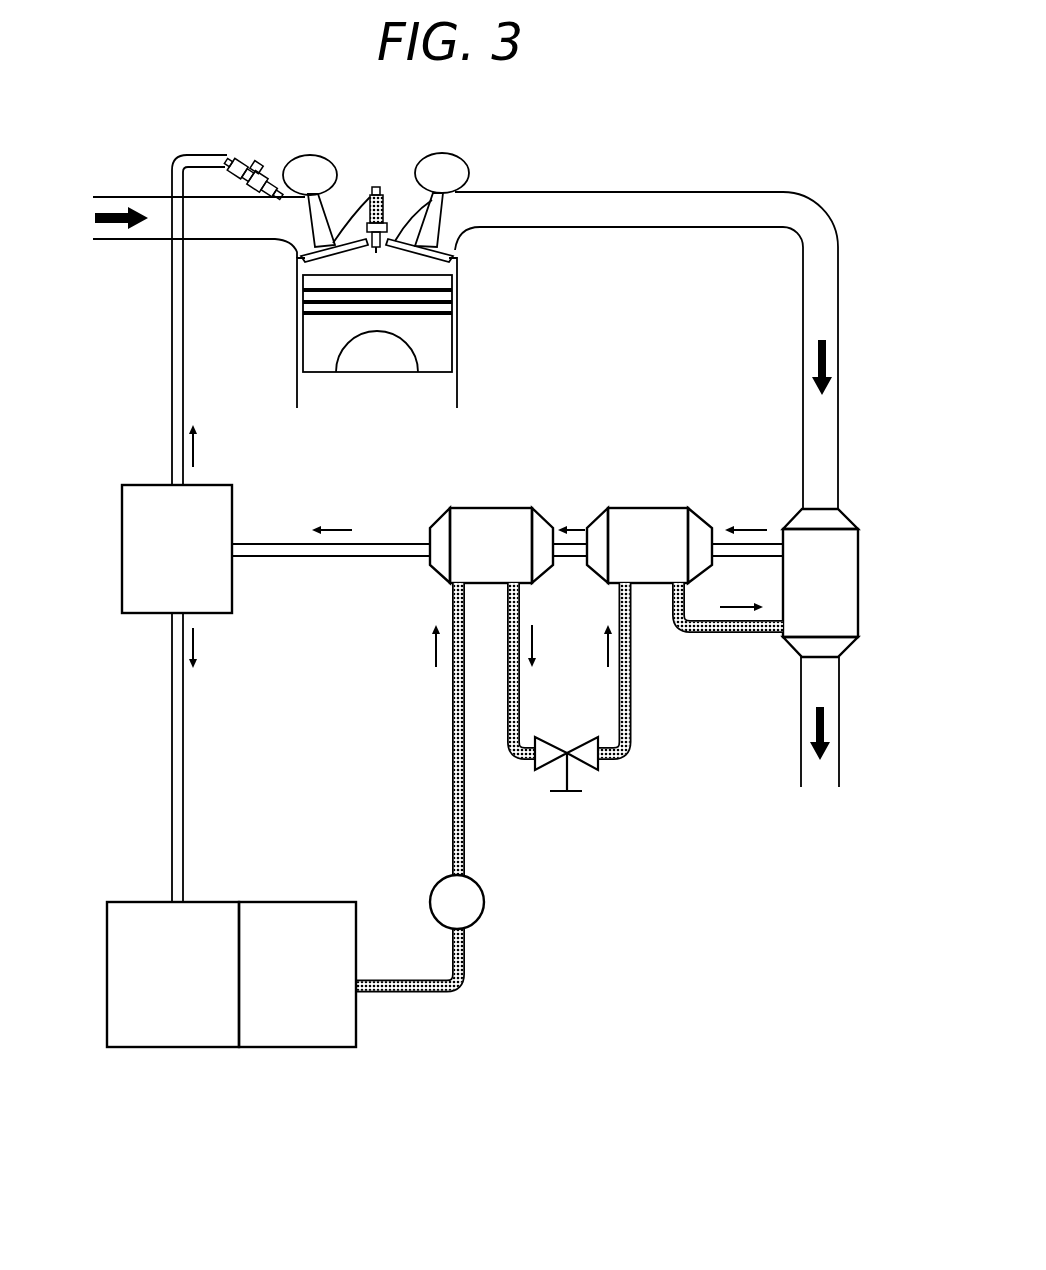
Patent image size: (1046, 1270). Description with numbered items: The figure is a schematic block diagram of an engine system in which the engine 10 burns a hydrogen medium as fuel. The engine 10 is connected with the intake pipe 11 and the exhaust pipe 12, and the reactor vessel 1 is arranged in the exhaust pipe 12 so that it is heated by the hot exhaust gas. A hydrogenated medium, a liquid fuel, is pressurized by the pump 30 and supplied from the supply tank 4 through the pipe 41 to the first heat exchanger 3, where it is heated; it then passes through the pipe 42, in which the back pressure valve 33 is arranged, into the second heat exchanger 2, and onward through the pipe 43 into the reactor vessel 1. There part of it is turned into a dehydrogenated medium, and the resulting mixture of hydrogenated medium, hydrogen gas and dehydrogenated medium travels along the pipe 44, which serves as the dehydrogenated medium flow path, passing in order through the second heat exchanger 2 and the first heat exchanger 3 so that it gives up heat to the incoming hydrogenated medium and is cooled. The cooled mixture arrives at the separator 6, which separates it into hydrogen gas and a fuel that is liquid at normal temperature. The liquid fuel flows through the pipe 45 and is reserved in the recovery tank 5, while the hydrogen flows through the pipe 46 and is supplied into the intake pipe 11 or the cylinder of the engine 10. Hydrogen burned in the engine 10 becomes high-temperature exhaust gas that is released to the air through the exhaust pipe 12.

The reactor vessel 1 is at (853, 590).
The second heat exchanger 2 is at (659, 508).
The first heat exchanger 3 is at (505, 508).
The supply tank 4 is at (308, 1048).
The recovery tank 5 is at (178, 1048).
The separator 6 is at (125, 520).
The engine 10 is at (297, 343).
The intake pipe 11 is at (133, 196).
The exhaust pipe 12 is at (785, 192).
The pump 30 is at (478, 913).
The back pressure valve 33 is at (562, 793).
The pipe 41 is at (418, 993).
The pipe 42 is at (627, 760).
The pipe 43 is at (743, 633).
The pipe 44 is at (268, 543).
The pipe 45 is at (168, 660).
The pipe 46 is at (170, 374).